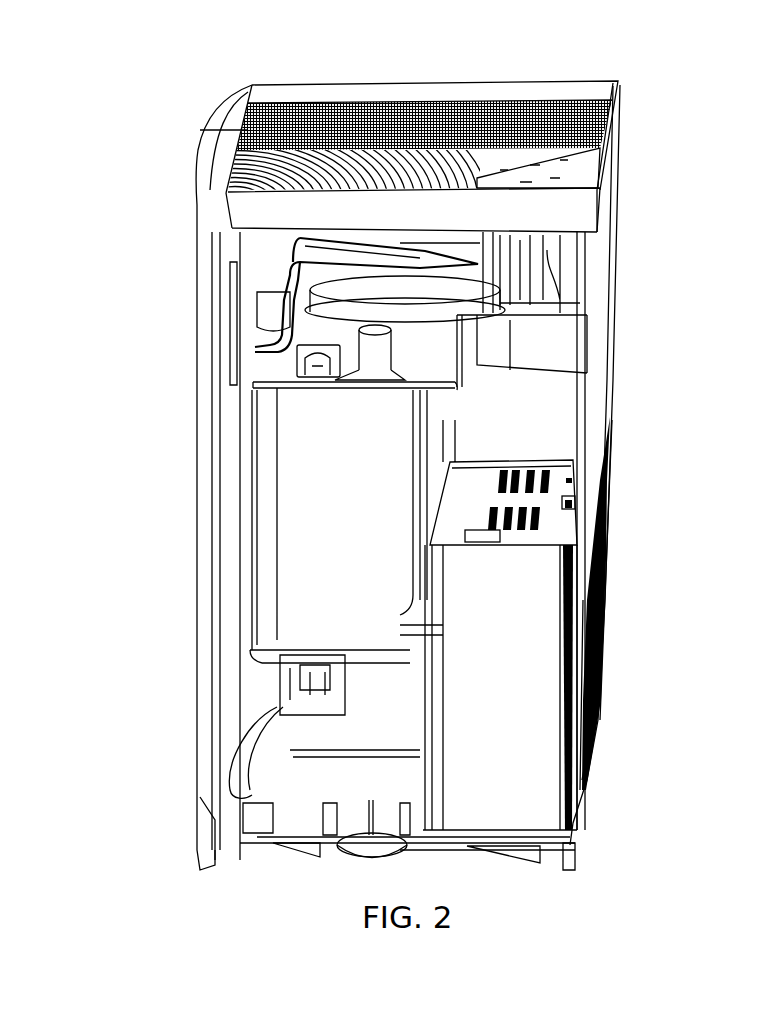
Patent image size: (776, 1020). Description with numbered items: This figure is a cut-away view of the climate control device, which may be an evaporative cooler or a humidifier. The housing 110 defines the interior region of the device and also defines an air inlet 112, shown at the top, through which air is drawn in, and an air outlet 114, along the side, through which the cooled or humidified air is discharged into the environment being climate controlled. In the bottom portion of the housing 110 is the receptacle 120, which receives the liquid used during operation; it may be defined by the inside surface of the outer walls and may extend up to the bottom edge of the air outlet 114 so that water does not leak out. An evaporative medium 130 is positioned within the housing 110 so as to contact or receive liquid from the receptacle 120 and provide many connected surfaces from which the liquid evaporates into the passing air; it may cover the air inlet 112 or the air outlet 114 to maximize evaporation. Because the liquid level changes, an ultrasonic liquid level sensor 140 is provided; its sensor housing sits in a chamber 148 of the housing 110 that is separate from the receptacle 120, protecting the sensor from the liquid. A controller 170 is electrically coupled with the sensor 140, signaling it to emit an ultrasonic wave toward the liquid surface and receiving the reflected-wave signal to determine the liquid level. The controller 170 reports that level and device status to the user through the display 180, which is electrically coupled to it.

The housing 110 is at (617, 385).
The air inlet 112 is at (610, 122).
The air outlet 114 is at (612, 503).
The receptacle 120 is at (363, 768).
The evaporative medium 130 is at (545, 718).
The ultrasonic liquid level sensor 140 is at (288, 364).
The chamber 148 is at (282, 255).
The controller 170 is at (570, 308).
The display 180 is at (603, 158).